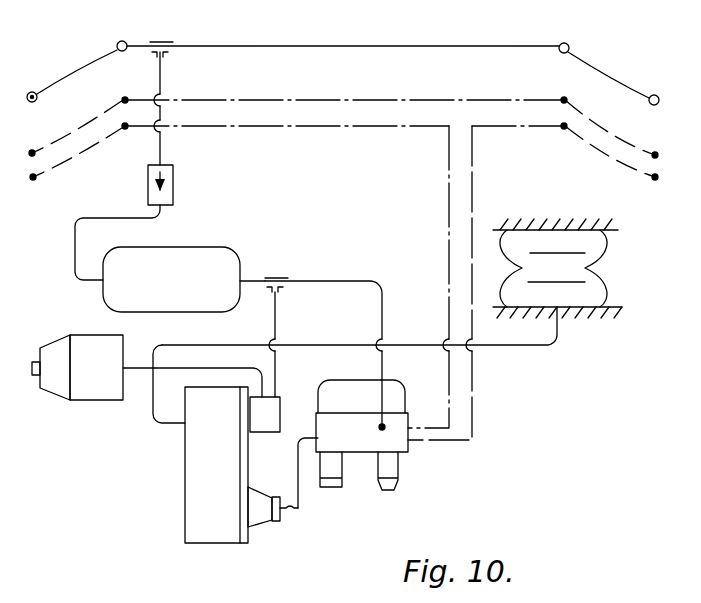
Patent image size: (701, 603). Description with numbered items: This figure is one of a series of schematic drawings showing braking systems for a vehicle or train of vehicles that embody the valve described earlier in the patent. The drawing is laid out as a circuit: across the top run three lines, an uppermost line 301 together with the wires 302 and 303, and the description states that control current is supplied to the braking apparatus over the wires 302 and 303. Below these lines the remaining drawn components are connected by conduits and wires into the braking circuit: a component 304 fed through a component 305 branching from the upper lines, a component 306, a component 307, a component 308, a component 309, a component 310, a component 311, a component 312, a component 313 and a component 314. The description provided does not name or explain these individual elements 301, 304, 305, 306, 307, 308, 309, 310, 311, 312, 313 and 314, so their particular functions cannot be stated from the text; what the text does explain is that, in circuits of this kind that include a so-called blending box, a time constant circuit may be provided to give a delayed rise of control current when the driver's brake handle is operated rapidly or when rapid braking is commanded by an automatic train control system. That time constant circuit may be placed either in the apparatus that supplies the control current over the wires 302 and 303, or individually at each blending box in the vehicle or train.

The first overhead line 301 is at (428, 40).
The wire 302 is at (431, 93).
The wire 303 is at (428, 159).
The tank 304 is at (238, 240).
The valve 305 is at (238, 187).
The conduit 306 is at (333, 281).
The control valve 307 is at (405, 379).
The horn 308 is at (298, 508).
The conduit 309 is at (281, 320).
The control unit 310 is at (182, 452).
The bellows 311 is at (530, 270).
The conduit 312 is at (401, 341).
The conduit 313 is at (181, 367).
The motor 314 is at (88, 400).